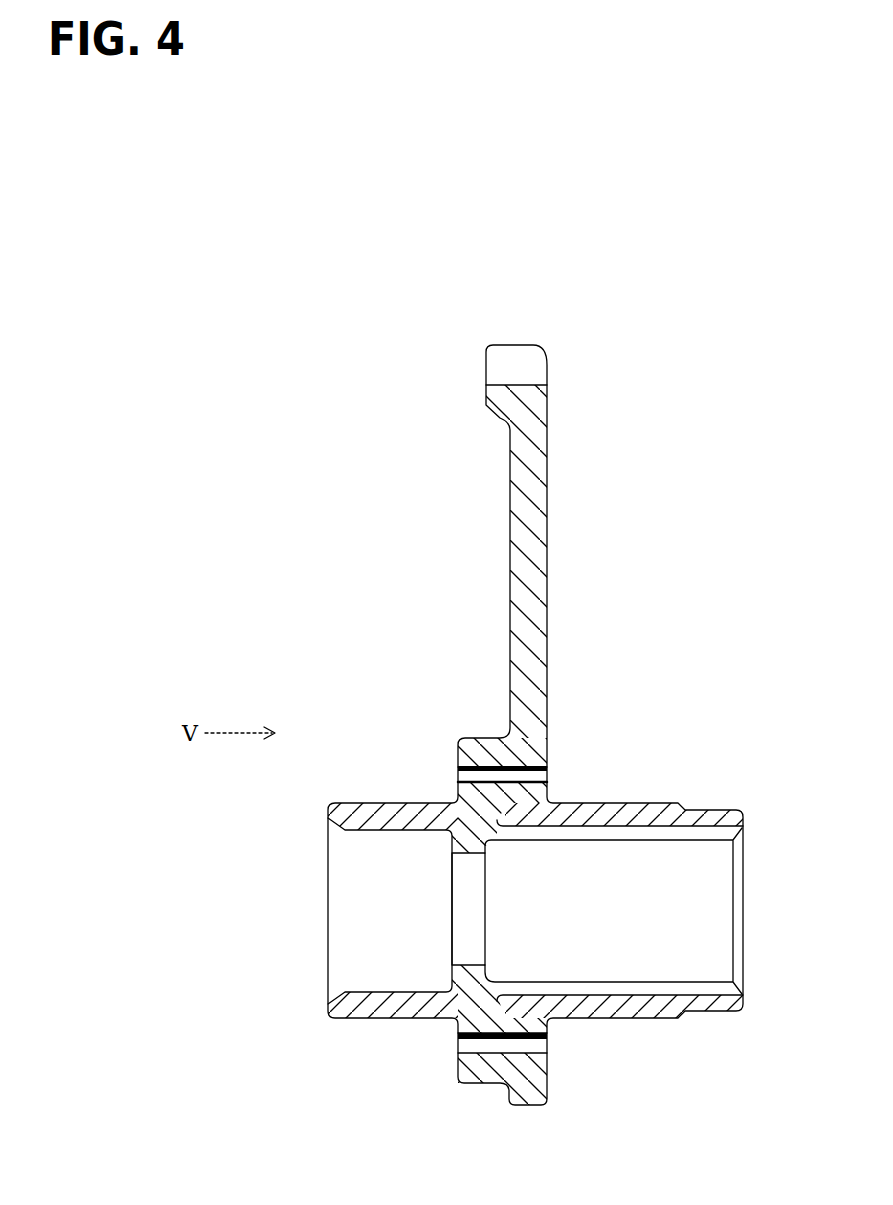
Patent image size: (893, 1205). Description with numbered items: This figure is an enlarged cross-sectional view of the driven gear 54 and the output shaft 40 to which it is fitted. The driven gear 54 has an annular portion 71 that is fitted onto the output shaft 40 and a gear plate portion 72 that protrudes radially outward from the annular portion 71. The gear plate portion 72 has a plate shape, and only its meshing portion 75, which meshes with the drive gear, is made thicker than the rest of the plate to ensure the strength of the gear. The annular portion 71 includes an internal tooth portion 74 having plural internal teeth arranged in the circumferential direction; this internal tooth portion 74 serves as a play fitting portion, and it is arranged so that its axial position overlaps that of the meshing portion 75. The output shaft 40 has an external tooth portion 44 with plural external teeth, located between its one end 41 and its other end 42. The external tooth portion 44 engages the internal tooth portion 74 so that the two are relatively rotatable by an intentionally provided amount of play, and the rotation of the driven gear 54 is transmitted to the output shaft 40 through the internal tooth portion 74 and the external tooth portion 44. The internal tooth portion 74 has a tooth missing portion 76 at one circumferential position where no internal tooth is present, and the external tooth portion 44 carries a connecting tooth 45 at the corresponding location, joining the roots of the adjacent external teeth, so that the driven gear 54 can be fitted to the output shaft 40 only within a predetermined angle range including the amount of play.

The output shaft 40 is at (535, 924).
The one end 41 is at (376, 812).
The other end 42 is at (680, 804).
The external tooth portion 44 is at (456, 776).
The connecting tooth 45 is at (512, 765).
The driven gear 54 is at (554, 515).
The annular portion 71 is at (503, 1072).
The gear plate portion 72 is at (520, 520).
The internal tooth portion 74 is at (532, 1045).
The meshing portion 75 is at (514, 348).
The tooth missing portion 76 is at (548, 777).